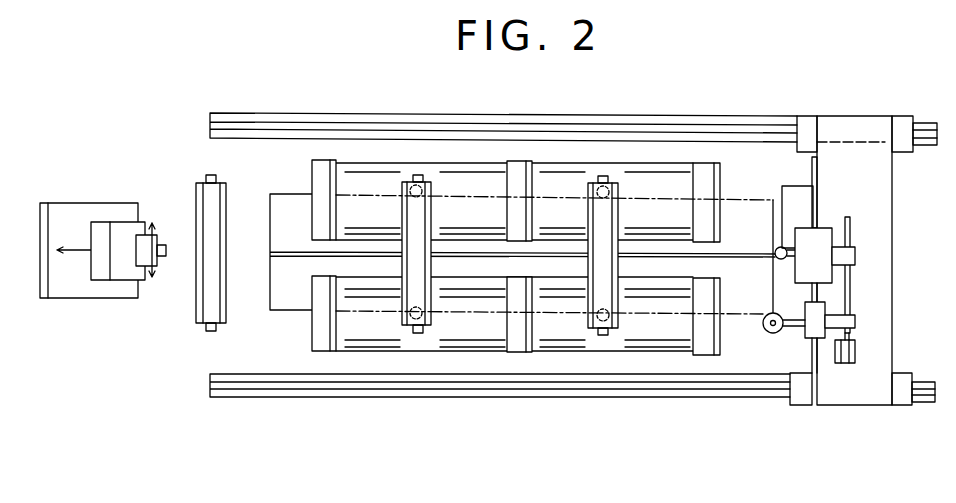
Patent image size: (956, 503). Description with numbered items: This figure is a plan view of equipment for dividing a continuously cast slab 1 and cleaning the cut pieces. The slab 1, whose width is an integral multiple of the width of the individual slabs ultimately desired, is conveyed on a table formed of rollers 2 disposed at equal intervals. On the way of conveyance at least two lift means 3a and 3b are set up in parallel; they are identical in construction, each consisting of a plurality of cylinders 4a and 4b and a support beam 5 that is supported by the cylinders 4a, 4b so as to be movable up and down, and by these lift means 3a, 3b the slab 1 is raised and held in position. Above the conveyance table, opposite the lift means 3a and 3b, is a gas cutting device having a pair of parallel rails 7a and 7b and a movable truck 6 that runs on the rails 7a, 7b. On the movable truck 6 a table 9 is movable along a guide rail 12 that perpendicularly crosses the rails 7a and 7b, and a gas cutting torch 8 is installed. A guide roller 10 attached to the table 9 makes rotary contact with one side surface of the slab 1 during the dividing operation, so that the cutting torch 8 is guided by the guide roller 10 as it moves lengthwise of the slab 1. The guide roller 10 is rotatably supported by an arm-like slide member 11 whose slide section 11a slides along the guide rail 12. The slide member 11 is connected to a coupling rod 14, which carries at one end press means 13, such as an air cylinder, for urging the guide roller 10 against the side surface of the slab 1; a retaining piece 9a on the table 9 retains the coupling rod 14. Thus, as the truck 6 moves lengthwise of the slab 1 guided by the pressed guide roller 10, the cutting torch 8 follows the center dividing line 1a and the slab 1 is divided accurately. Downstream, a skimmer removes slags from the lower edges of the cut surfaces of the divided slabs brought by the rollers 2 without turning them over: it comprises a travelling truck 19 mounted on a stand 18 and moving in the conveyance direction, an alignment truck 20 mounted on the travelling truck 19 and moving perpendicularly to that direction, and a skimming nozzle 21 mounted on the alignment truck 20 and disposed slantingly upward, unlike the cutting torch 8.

The slab 1 is at (297, 203).
The center dividing line 1a is at (672, 305).
The rollers 2 is at (202, 213).
The lift means 3a is at (514, 358).
The lift means 3b is at (520, 160).
The cylinders 4a is at (415, 318).
The cylinders 4b is at (415, 195).
The support beam 5 is at (562, 168).
The movable truck 6 is at (836, 128).
The rail 7a is at (338, 385).
The rail 7b is at (373, 123).
The gas cutting torch 8 is at (776, 247).
The table 9 is at (822, 232).
The retaining piece 9a is at (855, 258).
The guide roller 10 is at (770, 335).
The slide member 11 is at (800, 336).
The slide section 11a is at (818, 345).
The guide rail 12 is at (812, 183).
The press means 13 is at (858, 355).
The coupling rod 14 is at (850, 290).
The stand 18 is at (66, 213).
The travelling truck 19 is at (102, 230).
The alignment truck 20 is at (140, 243).
The skimming nozzle 21 is at (163, 256).